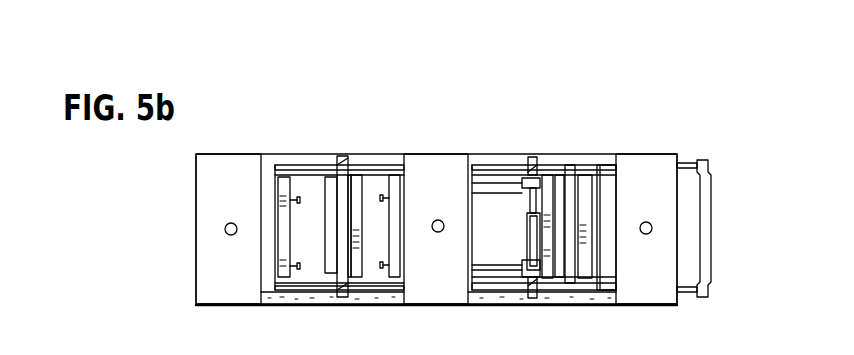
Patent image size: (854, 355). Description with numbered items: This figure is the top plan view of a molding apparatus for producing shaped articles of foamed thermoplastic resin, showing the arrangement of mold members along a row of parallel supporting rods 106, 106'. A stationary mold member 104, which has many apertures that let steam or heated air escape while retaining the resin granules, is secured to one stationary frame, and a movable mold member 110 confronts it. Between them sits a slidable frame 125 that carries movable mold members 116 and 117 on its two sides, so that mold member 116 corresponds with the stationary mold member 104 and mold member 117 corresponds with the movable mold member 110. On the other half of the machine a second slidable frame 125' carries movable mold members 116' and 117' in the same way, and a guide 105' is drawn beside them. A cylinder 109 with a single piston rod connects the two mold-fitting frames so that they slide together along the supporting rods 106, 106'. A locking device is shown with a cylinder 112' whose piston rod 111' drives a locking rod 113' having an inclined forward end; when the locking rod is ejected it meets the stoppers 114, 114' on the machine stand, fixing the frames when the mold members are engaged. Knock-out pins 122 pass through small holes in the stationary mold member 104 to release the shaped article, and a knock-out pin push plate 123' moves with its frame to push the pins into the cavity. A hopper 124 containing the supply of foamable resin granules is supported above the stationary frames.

The stationary mold member 104 is at (285, 292).
The guide strip 105' is at (624, 227).
The supporting rod 106 is at (332, 197).
The supporting rod 106' is at (537, 257).
The cylinder 109 is at (480, 178).
The movable mold member 110 is at (397, 264).
The piston rod 111' is at (512, 206).
The cylinder 112' is at (510, 241).
The locking rod 113' is at (546, 223).
The stopper 114 is at (325, 231).
The stopper 114' is at (545, 225).
The movable mold member 116 is at (317, 263).
The movable mold member 116' is at (601, 195).
The movable mold member 117 is at (372, 262).
The movable mold member 117' is at (600, 226).
The knock-out pin 122 is at (300, 270).
The knock-out pin push plate 123' is at (710, 214).
The hopper 124 is at (230, 162).
The slidable frame 125 is at (350, 195).
The slidable frame 125' is at (569, 190).